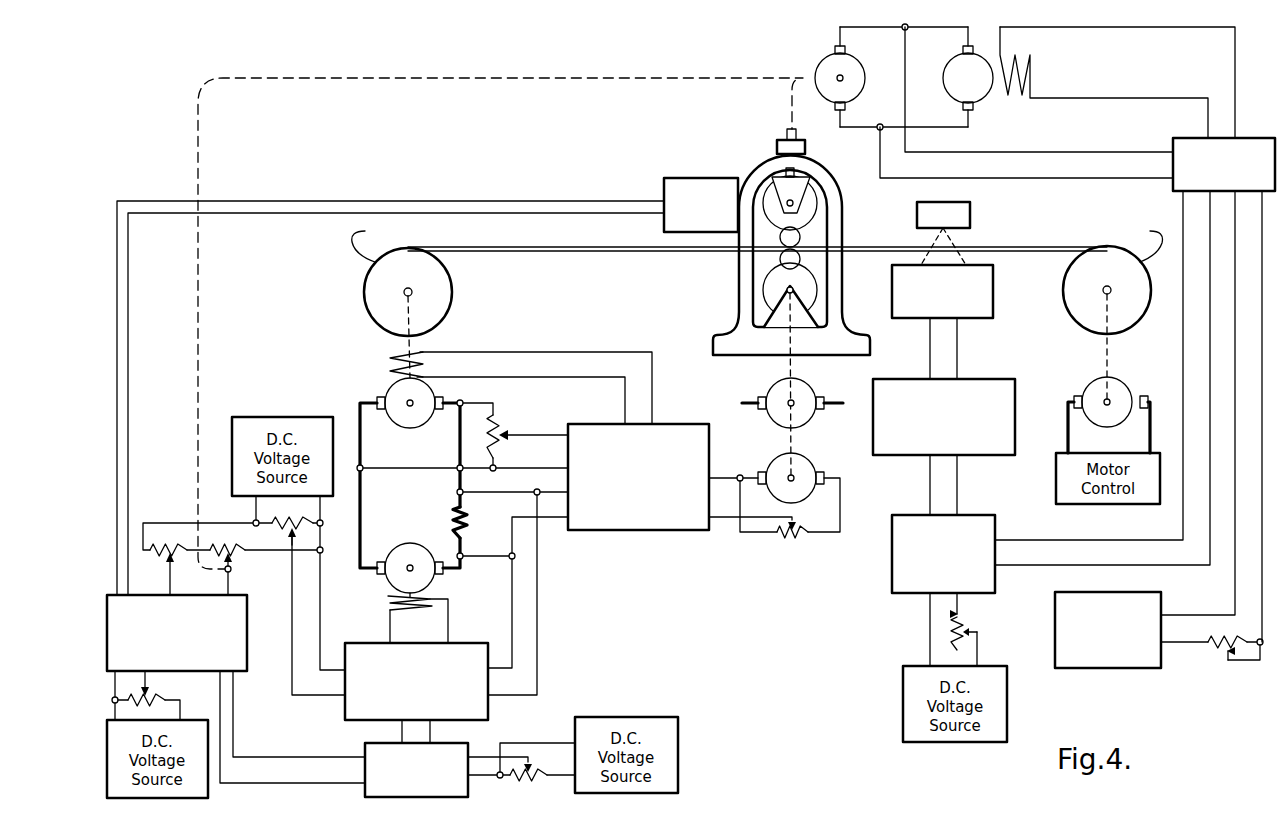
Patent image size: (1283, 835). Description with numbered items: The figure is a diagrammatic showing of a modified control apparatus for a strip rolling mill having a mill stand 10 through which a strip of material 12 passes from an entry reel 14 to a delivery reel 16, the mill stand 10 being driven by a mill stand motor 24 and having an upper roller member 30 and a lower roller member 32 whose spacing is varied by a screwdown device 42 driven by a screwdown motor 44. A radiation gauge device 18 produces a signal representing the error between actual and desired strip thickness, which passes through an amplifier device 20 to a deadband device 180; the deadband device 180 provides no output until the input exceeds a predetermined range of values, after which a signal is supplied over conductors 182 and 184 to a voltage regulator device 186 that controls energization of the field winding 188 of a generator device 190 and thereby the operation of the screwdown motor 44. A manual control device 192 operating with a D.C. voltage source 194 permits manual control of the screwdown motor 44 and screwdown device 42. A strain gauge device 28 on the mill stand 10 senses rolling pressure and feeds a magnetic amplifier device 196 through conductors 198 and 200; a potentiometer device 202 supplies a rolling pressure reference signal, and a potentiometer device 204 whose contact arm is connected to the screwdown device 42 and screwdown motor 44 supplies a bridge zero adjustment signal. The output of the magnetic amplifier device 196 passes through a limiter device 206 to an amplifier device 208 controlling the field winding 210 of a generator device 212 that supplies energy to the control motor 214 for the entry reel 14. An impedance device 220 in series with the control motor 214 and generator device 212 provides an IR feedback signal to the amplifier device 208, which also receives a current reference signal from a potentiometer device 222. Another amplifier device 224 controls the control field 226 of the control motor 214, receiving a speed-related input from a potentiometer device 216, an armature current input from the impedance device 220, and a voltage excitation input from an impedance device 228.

The mill stand 10 is at (866, 197).
The strip of material 12 is at (975, 250).
The entry reel 14 is at (451, 272).
The delivery reel 16 is at (1064, 274).
The radiation gauge device 18 is at (994, 295).
The amplifier device 20 is at (1015, 382).
The mill stand motor 24 is at (810, 386).
The strain gauge device 28 is at (700, 178).
The upper roller member 30 is at (800, 237).
The lower roller member 32 is at (800, 259).
The screwdown device 42 is at (786, 134).
The screwdown motor 44 is at (857, 60).
The deadband device 180 is at (973, 515).
The conductor 182 is at (1090, 540).
The conductor 184 is at (1090, 565).
The voltage regulator device 186 is at (1180, 138).
The field winding 188 is at (1026, 66).
The generator device 190 is at (951, 62).
The manual control device 192 is at (1212, 636).
The D.C. voltage source 194 is at (1055, 631).
The magnetic amplifier device 196 is at (247, 597).
The conductor 198 is at (117, 440).
The conductor 200 is at (128, 418).
The potentiometer device 202 is at (167, 697).
The potentiometer device 204 is at (247, 544).
The limiter device 206 is at (452, 743).
The amplifier device 208 is at (455, 643).
The field winding 210 is at (386, 603).
The generator device 212 is at (418, 544).
The control motor 214 is at (388, 386).
The potentiometer device 216 is at (780, 540).
The impedance device 220 is at (467, 521).
The potentiometer device 222 is at (303, 517).
The amplifier device 224 is at (672, 424).
The control field 226 is at (388, 361).
The impedance device 228 is at (505, 420).